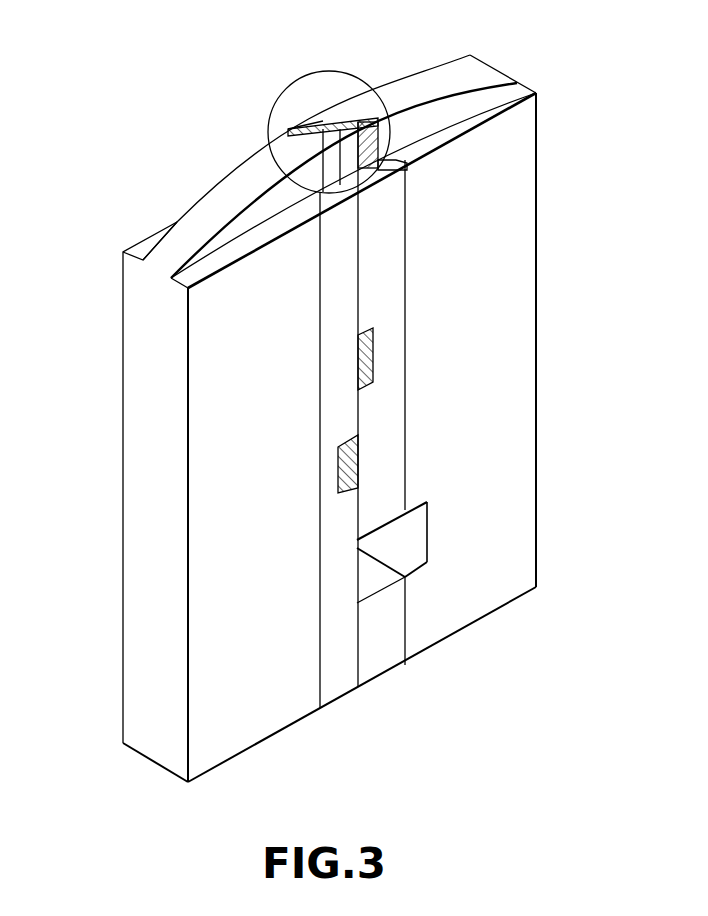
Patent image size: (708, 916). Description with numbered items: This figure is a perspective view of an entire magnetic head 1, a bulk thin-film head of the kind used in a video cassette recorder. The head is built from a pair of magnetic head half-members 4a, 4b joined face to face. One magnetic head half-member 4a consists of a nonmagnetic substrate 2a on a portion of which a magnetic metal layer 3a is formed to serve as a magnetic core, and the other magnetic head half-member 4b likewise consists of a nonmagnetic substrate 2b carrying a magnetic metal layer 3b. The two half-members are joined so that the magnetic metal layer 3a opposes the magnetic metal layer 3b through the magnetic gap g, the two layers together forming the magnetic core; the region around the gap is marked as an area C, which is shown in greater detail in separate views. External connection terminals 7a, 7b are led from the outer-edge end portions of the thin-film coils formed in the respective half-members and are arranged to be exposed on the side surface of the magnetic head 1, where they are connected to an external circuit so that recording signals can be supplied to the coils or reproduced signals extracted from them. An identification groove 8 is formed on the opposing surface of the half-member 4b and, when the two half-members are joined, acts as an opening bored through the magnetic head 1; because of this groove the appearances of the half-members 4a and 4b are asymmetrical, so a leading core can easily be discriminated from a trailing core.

The magnetic head 1 is at (151, 129).
The nonmagnetic substrate 2a is at (256, 172).
The nonmagnetic substrate 2b is at (421, 84).
The magnetic metal layer 3a is at (303, 130).
The magnetic metal layer 3b is at (346, 120).
The magnetic head half-member 4a is at (146, 434).
The magnetic head half-member 4b is at (516, 232).
The external connection terminal 7a is at (349, 468).
The external connection terminal 7b is at (369, 361).
The identification groove 8 is at (413, 551).
The area C is at (290, 88).
The magnetic gap g is at (330, 122).